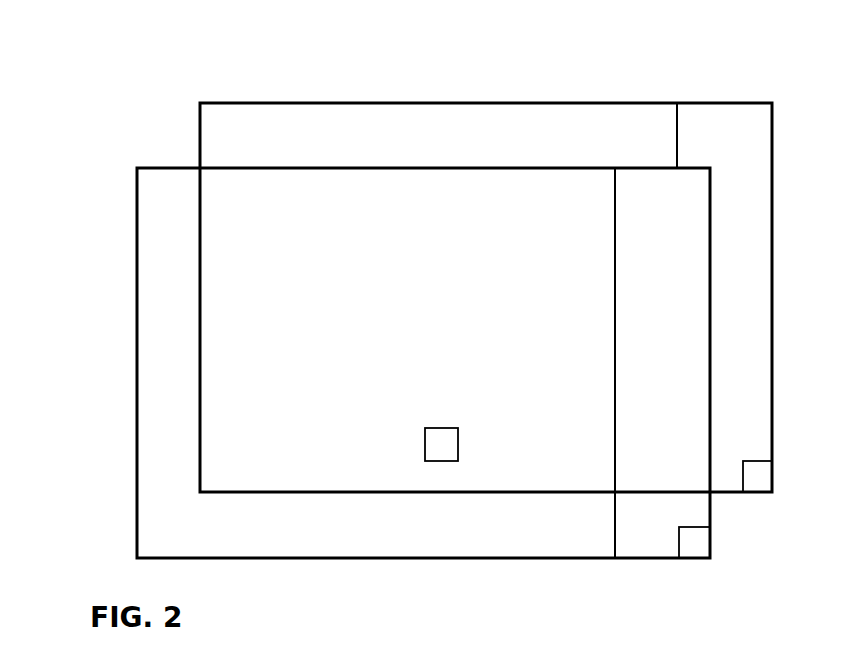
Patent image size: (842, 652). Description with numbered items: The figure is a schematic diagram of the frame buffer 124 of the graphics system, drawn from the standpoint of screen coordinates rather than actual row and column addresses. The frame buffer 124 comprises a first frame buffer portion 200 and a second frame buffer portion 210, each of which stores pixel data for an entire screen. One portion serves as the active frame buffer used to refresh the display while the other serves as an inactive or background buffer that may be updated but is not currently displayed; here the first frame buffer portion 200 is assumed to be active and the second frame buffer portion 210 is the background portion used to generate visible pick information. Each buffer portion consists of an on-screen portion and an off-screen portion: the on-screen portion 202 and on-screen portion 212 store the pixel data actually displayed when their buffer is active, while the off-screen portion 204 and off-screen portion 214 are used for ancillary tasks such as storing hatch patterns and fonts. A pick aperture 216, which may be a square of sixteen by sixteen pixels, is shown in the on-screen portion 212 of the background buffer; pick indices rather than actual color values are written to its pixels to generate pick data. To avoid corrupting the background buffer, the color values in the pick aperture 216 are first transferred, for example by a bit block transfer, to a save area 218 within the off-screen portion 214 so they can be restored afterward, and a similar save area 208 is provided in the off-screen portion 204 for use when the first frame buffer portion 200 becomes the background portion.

The frame buffer 124 is at (149, 98).
The first frame buffer portion 200 is at (573, 102).
The on-screen portion 202 is at (323, 151).
The off-screen portion 204 is at (733, 151).
The save area 208 is at (755, 472).
The second frame buffer portion 210 is at (498, 560).
The on-screen portion 212 is at (267, 287).
The off-screen portion 214 is at (677, 287).
The pick aperture 216 is at (432, 449).
The off-screen save area portion 218 is at (690, 532).